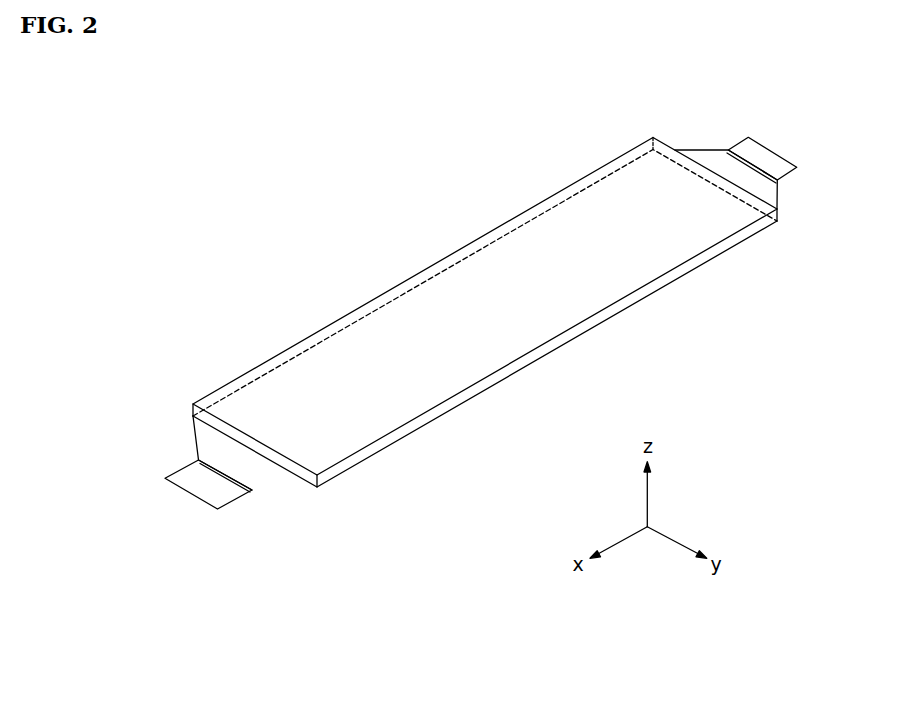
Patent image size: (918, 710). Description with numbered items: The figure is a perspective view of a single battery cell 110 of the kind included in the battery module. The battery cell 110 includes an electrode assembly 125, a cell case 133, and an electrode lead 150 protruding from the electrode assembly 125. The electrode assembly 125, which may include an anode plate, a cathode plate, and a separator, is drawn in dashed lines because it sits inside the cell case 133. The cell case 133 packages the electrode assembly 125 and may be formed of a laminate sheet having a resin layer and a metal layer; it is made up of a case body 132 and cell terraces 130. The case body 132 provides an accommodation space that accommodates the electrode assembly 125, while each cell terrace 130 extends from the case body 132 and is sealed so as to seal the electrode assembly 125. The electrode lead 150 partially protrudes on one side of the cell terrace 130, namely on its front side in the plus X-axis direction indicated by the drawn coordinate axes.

The battery cell 110 is at (431, 244).
The electrode assembly 125 is at (353, 327).
The cell terrace 130 is at (278, 475).
The case body 132 is at (385, 422).
The cell case 133 is at (442, 589).
The electrode lead 150 is at (202, 483).